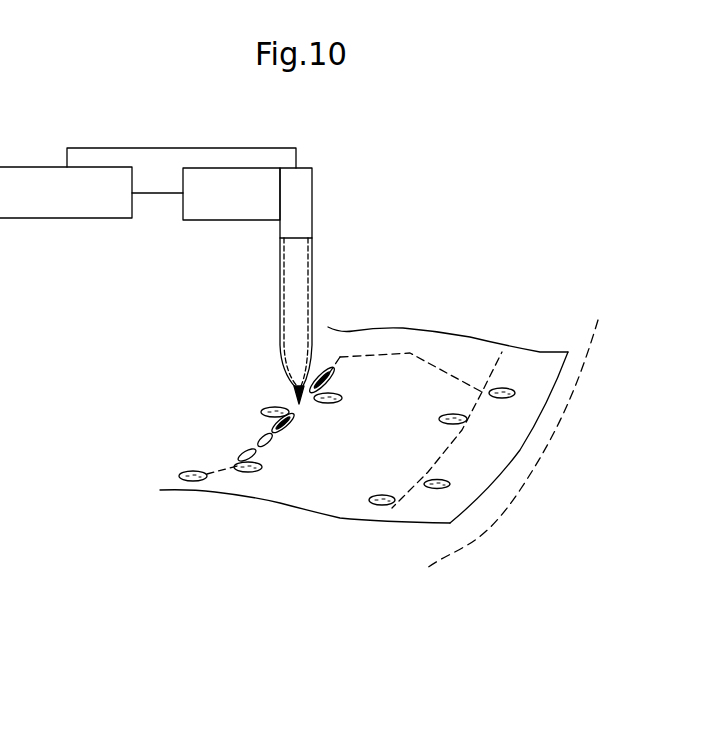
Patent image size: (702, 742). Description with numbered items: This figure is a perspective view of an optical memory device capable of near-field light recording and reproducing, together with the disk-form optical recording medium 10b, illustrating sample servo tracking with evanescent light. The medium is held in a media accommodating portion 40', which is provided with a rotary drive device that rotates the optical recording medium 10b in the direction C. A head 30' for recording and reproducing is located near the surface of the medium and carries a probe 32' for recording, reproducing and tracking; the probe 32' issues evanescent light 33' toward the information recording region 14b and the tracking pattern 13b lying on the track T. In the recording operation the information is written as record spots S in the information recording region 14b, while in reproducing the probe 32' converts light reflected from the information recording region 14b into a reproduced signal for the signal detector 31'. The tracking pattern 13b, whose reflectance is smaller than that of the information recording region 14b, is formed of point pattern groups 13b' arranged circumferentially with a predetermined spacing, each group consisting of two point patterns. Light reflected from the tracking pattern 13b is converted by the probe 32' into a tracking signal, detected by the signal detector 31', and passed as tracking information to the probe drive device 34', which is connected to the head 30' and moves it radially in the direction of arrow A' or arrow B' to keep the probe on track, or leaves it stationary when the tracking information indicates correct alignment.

The signal detector 31' is at (66, 217).
The probe drive device 34' is at (222, 217).
The head 30' is at (206, 237).
The probe 32' is at (261, 313).
The evanescent light 33' is at (253, 372).
The optical recording medium 10b is at (558, 401).
The information recording region 14b is at (500, 357).
The media accommodating portion 40' is at (527, 444).
The track T is at (354, 420).
The record spots S is at (332, 383).
The tracking pattern 13b is at (336, 453).
The point pattern groups 13b' is at (173, 440).
The rotation direction C is at (192, 348).
The arrow A' direction A' is at (245, 553).
The arrow B' direction B' is at (169, 520).